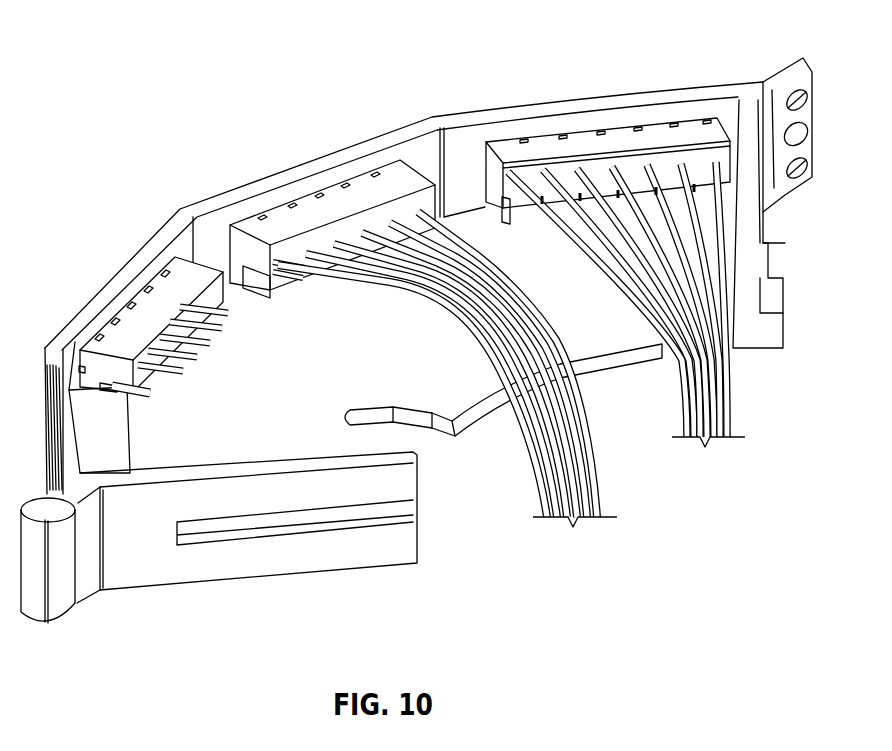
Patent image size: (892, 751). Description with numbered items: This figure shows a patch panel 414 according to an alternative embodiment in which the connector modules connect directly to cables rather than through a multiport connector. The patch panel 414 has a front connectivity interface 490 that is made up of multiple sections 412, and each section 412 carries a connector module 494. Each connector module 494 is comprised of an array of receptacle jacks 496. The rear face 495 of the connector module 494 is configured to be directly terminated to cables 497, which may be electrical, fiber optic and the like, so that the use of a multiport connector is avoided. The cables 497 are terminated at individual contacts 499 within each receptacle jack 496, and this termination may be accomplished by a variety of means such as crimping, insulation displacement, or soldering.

The patch panel 414 is at (150, 76).
The section 412 is at (738, 84).
The front connectivity interface 490 is at (277, 170).
The connector module 494 is at (133, 308).
The rear face 495 is at (210, 343).
The receptacle jack 496 is at (150, 394).
The cables 497 is at (447, 323).
The contacts 499 is at (173, 373).